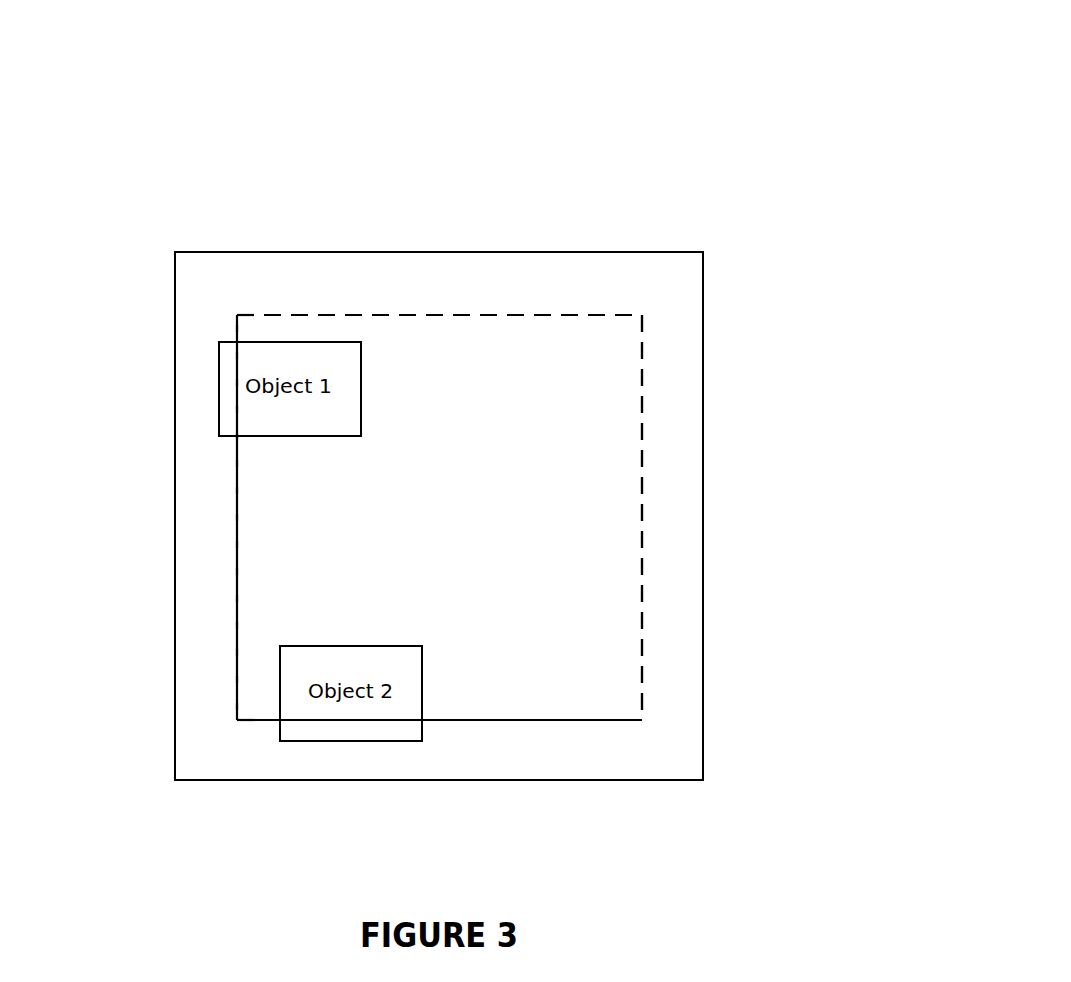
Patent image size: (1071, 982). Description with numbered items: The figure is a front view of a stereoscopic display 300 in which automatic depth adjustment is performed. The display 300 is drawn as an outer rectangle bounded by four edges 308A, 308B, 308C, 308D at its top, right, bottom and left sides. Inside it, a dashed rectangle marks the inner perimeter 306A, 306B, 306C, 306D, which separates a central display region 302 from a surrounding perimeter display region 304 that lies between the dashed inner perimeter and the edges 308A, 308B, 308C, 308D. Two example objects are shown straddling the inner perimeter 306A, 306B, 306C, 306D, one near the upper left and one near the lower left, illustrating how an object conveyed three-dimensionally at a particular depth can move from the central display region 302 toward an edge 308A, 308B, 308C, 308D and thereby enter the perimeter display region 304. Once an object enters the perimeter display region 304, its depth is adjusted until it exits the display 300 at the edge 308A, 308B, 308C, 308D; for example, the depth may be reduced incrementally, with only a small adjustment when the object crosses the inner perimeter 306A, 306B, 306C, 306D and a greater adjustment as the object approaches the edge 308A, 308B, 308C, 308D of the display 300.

The stereoscopic display 300 is at (706, 96).
The central display region 302 is at (600, 420).
The perimeter display region 304 is at (673, 298).
The inner perimeter of the perimeter display region 306A is at (290, 315).
The inner perimeter of the perimeter display region 306B is at (642, 595).
The inner perimeter of the perimeter display region 306C is at (592, 720).
The inner perimeter of the perimeter display region 306D is at (237, 667).
The edge of the display 308A is at (390, 252).
The edge of the display 308B is at (703, 500).
The edge of the display 308C is at (492, 780).
The edge of the display 308D is at (175, 548).